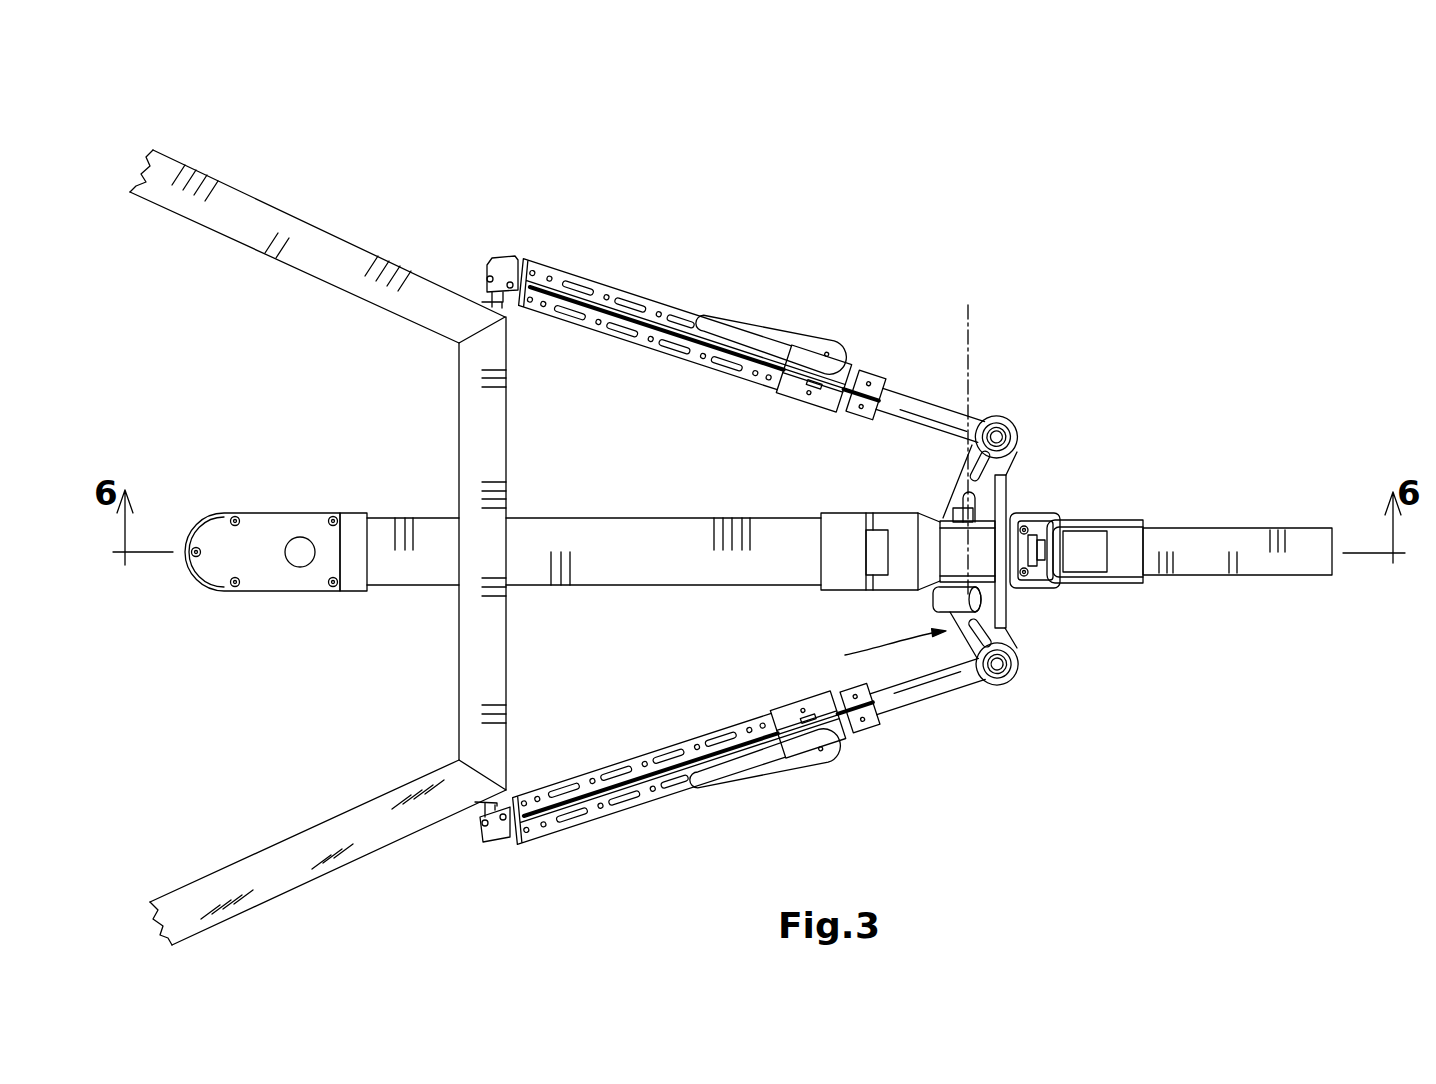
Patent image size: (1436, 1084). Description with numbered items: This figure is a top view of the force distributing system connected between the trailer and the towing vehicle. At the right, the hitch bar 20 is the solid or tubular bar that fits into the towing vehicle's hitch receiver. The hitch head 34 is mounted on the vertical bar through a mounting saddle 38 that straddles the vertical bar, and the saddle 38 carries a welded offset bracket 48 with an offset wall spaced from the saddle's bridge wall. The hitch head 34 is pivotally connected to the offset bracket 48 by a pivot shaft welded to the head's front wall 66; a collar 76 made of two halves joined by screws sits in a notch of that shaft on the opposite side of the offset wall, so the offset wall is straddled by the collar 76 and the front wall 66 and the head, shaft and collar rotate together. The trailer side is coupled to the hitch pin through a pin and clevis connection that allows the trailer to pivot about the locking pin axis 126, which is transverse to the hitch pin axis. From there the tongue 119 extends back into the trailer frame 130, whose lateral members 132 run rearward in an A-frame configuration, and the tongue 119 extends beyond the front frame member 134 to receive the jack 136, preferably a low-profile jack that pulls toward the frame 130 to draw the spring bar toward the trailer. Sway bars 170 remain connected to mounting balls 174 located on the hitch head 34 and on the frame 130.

The trailer frame 130 is at (287, 172).
The lateral members 132 is at (437, 300).
The front frame member 134 is at (500, 667).
The jack 136 is at (270, 493).
The tongue 119 is at (652, 532).
The locking pin axis 126 is at (965, 323).
The sway bars 170 is at (645, 302).
The mounting balls 174 is at (505, 298).
The front wall 66 is at (1010, 607).
The offset bracket 48 is at (1040, 589).
The collar 76 is at (1022, 528).
The mounting saddle 38 is at (1120, 520).
The hitch bar 20 is at (1213, 528).
The hitch head 34 is at (878, 652).